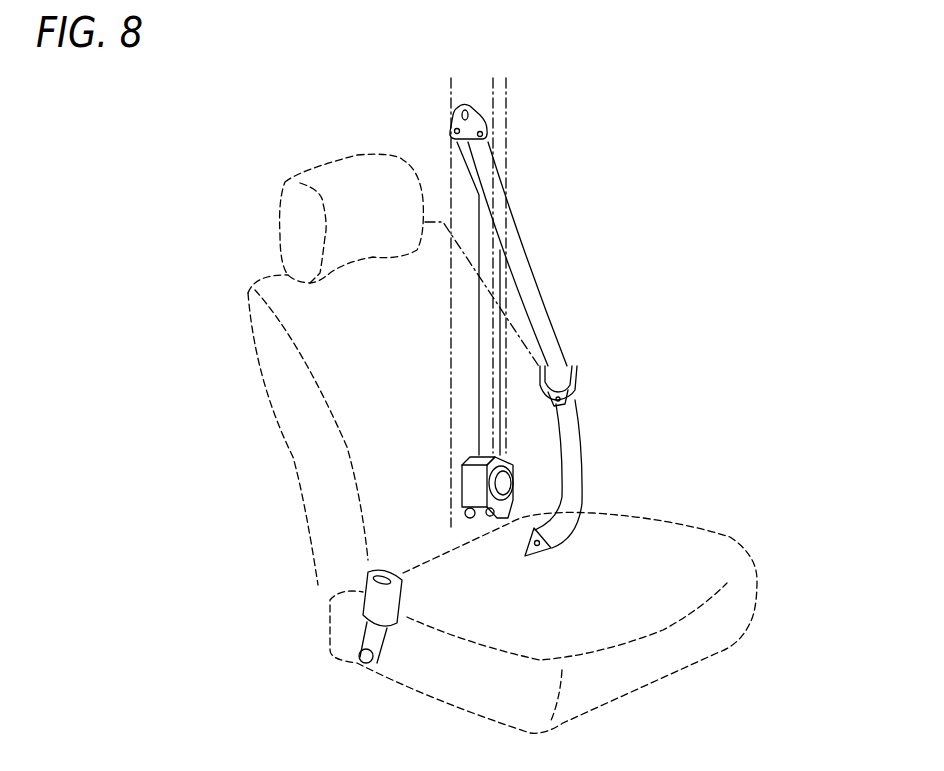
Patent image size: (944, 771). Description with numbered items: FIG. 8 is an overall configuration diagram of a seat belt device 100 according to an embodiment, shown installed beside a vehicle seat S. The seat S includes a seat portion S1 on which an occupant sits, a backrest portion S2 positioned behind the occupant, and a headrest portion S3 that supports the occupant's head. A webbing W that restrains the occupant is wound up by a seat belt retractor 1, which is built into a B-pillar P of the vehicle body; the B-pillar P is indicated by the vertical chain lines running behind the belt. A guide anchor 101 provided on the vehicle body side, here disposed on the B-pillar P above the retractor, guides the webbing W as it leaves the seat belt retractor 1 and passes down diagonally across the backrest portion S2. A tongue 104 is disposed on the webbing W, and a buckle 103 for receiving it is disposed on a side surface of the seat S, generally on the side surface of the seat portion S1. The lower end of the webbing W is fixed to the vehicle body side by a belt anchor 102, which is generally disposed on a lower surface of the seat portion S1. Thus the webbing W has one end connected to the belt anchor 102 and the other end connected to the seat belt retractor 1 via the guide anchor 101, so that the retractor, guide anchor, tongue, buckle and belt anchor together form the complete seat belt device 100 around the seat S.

The seat belt retractor 1 is at (475, 483).
The seat belt device 100 is at (583, 311).
The guide anchor 101 is at (452, 132).
The belt anchor 102 is at (545, 556).
The buckle 103 is at (365, 590).
The tongue 104 is at (578, 378).
The B-pillar P is at (500, 102).
The webbing W is at (525, 257).
The seat S is at (228, 255).
The seat portion S1 is at (684, 568).
The backrest portion S2 is at (382, 336).
The headrest portion S3 is at (381, 215).